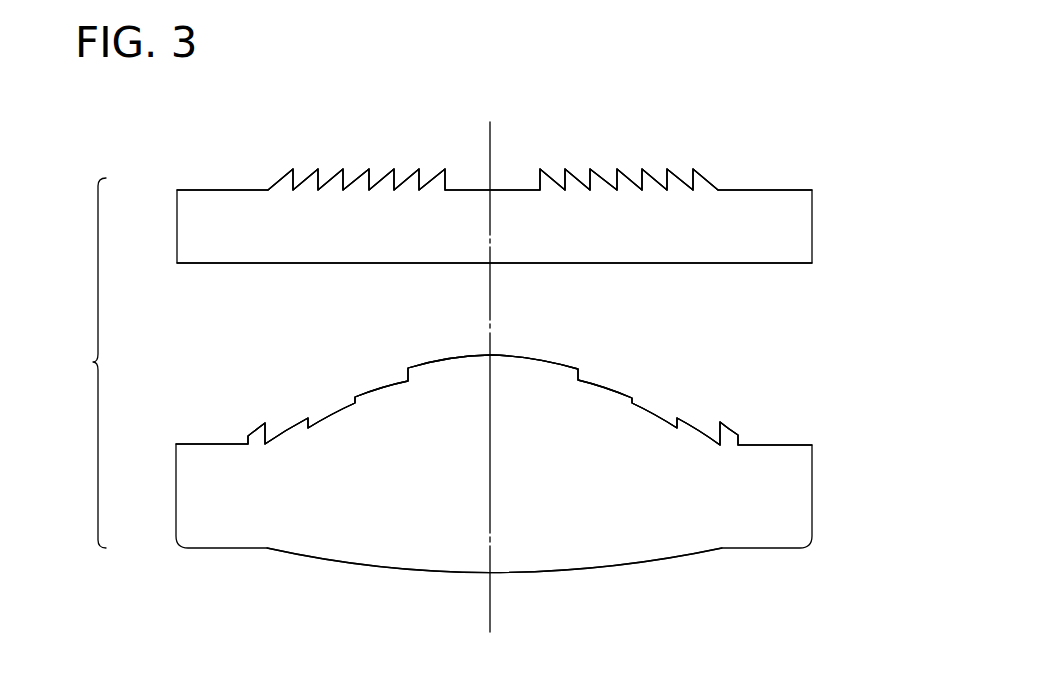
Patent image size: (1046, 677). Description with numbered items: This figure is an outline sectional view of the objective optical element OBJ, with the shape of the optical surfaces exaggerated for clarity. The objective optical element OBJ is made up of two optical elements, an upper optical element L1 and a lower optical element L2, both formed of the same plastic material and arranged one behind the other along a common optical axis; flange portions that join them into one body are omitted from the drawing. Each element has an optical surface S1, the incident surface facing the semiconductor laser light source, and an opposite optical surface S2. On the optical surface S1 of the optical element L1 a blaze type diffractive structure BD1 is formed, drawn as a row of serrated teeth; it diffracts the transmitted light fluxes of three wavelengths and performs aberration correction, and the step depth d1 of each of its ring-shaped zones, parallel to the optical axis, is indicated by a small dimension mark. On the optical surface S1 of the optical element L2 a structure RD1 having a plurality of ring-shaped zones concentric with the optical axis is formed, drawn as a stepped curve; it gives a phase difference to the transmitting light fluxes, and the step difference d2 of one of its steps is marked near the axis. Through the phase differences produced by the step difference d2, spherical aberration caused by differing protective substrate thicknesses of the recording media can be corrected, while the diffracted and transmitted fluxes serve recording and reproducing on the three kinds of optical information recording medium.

The objective optical element OBJ is at (75, 363).
The optical element L1 is at (798, 227).
The optical element L2 is at (798, 493).
The optical surface S1 is at (738, 172).
The optical surface S2 is at (734, 268).
The blaze type diffractive structure BD1 is at (592, 150).
The structure having a plurality of ring-shaped zones RD1 is at (657, 366).
The step depth d1 is at (538, 190).
The step difference d2 is at (602, 380).